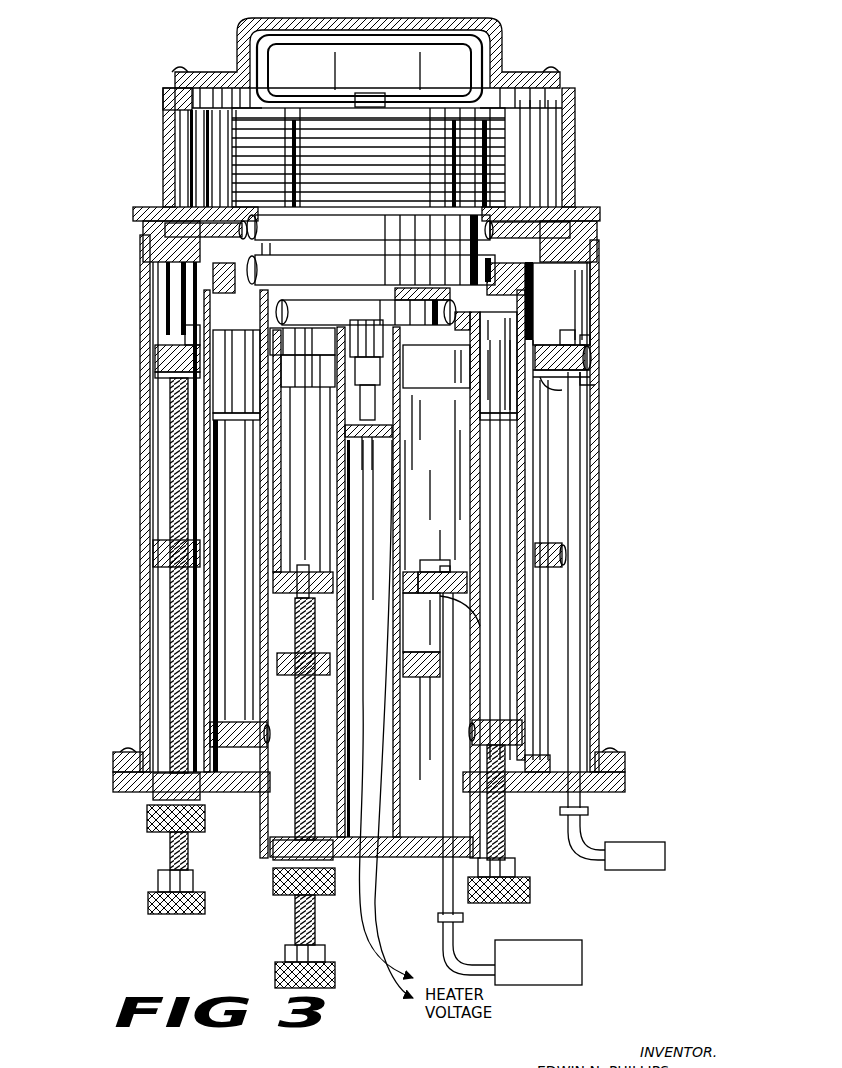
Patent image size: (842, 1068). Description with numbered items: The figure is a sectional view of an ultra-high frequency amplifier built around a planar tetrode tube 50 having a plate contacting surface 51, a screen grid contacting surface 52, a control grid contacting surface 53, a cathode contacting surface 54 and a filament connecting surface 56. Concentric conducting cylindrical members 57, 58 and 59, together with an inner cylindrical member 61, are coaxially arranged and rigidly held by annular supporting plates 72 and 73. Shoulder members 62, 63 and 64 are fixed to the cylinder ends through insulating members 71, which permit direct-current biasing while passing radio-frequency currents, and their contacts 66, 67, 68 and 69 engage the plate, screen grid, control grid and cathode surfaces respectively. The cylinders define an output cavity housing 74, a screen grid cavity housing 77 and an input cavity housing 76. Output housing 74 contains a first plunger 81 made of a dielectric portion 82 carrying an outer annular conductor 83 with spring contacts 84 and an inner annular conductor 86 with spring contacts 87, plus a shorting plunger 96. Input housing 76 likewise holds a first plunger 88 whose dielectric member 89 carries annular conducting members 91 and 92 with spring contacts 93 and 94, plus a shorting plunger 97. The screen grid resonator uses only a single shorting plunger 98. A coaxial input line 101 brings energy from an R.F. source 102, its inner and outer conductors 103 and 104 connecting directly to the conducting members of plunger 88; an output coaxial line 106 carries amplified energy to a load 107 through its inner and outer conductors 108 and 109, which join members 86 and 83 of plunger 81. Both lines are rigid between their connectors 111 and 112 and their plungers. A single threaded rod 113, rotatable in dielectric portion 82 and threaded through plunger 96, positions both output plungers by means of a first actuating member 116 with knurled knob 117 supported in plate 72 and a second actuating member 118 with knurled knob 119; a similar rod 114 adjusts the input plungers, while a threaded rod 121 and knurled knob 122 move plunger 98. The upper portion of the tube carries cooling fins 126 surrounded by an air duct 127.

The tube 50 is at (509, 174).
The plate contacting surface 51 is at (349, 231).
The screen grid contacting surface 52 is at (338, 277).
The control grid contacting surface 53 is at (340, 321).
The cathode contacting surface 54 is at (446, 364).
The filament connecting surface 56 is at (435, 477).
The first cylindrical member 57 is at (142, 512).
The second cylindrical member 58 is at (535, 480).
The third cylindrical member 59 is at (470, 532).
The cylindrical member 61 is at (388, 520).
The shoulder member 62 is at (250, 230).
The shoulder member 63 is at (520, 283).
The shoulder member 64 is at (465, 312).
The contacts 66 is at (263, 248).
The contacts 67 is at (262, 286).
The contacts 68 is at (436, 366).
The contacts 69 is at (308, 463).
The insulating members 71 is at (165, 233).
The annular supporting plate 72 is at (251, 792).
The annular supporting plate 73 is at (430, 857).
The output cavity housing 74 is at (176, 305).
The input cavity housing 76 is at (432, 441).
The screen grid cavity housing 77 is at (250, 571).
The first plunger 81 is at (585, 345).
The dielectric portion 82 is at (578, 350).
The outer annular conductor 83 is at (590, 350).
The spring contacts 84 is at (158, 372).
The inner annular conductor 86 is at (545, 345).
The spring contacts 87 is at (562, 374).
The first plunger 88 is at (326, 567).
The dielectric member 89 is at (420, 558).
The annular conducting member 91 is at (450, 572).
The annular conducting member 92 is at (410, 572).
The spring contacts 93 is at (336, 597).
The spring contacts 94 is at (466, 575).
The shorting plunger 96 is at (188, 547).
The shorting plunger 97 is at (438, 650).
The plunger 98 is at (253, 722).
The coaxial input line 101 is at (443, 900).
The R.F. source 102 is at (538, 928).
The inner conductor 103 is at (438, 595).
The outer conductor 104 is at (473, 616).
The output coaxial line 106 is at (588, 812).
The load 107 is at (612, 870).
The inner conductor 108 is at (592, 380).
The outer conductor 109 is at (598, 368).
The connector 111 is at (440, 920).
The connector 112 is at (590, 820).
The threaded rod 113 is at (175, 476).
The threaded rod 114 is at (297, 925).
The first actuating member 116 is at (158, 800).
The knurled knob 117 is at (148, 822).
The second actuating member 118 is at (158, 880).
The knurled knob 119 is at (150, 905).
The threaded rod 121 is at (505, 809).
The knurled knob 122 is at (530, 888).
The fins 126 is at (500, 138).
The duct 127 is at (576, 133).